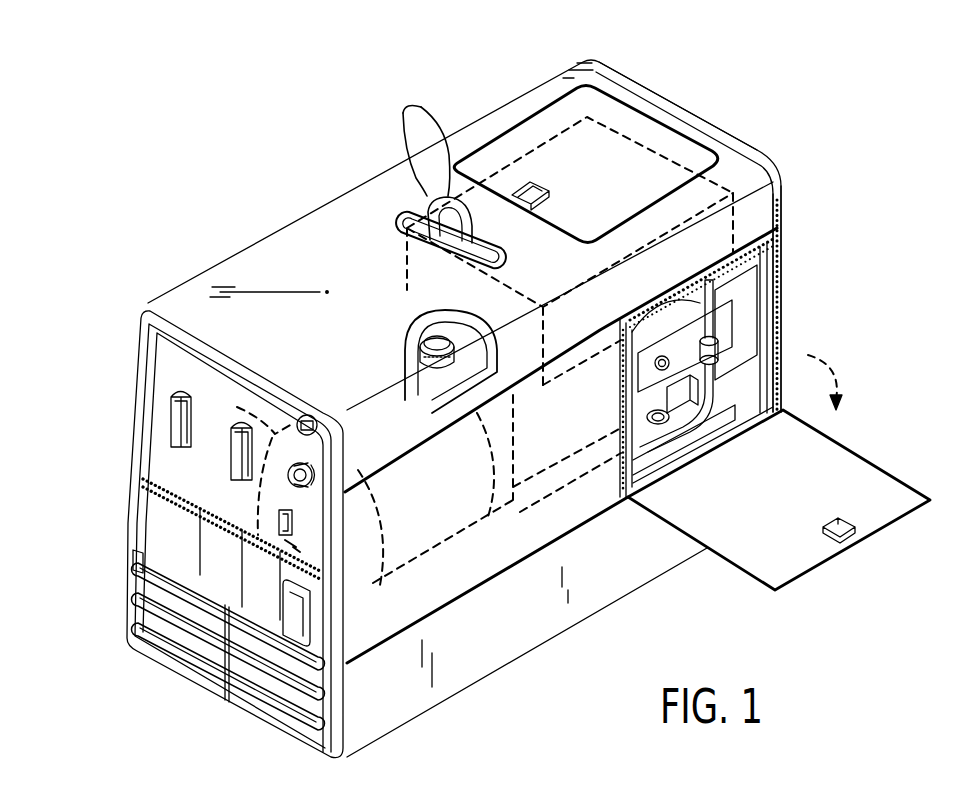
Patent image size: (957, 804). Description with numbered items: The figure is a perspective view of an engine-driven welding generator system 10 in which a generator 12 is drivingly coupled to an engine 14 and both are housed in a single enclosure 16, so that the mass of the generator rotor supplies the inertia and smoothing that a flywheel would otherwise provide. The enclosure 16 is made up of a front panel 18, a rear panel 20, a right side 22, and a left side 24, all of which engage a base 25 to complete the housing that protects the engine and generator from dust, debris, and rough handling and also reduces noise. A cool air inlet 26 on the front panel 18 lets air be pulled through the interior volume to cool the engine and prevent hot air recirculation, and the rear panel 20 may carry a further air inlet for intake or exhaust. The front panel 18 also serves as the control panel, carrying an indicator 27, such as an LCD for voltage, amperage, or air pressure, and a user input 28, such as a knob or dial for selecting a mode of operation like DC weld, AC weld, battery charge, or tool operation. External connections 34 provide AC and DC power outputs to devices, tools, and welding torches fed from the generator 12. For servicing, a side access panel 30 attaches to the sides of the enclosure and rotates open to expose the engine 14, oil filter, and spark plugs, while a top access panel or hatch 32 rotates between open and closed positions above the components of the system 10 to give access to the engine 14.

The engine-driven welding generator system 10 is at (240, 105).
The generator 12 is at (238, 408).
The engine 14 is at (533, 470).
The single enclosure 16 is at (312, 270).
The front panel 18 is at (177, 367).
The rear panel 20 is at (700, 117).
The right side 22 is at (763, 198).
The left side 24 is at (403, 158).
The base 25 is at (493, 647).
The cool air inlet 26 is at (207, 667).
The indicator 27 is at (298, 422).
The user input 28 is at (288, 478).
The side access panel 30 is at (853, 478).
The access panel or hatch 32 is at (617, 123).
The external connections 34 is at (137, 549).